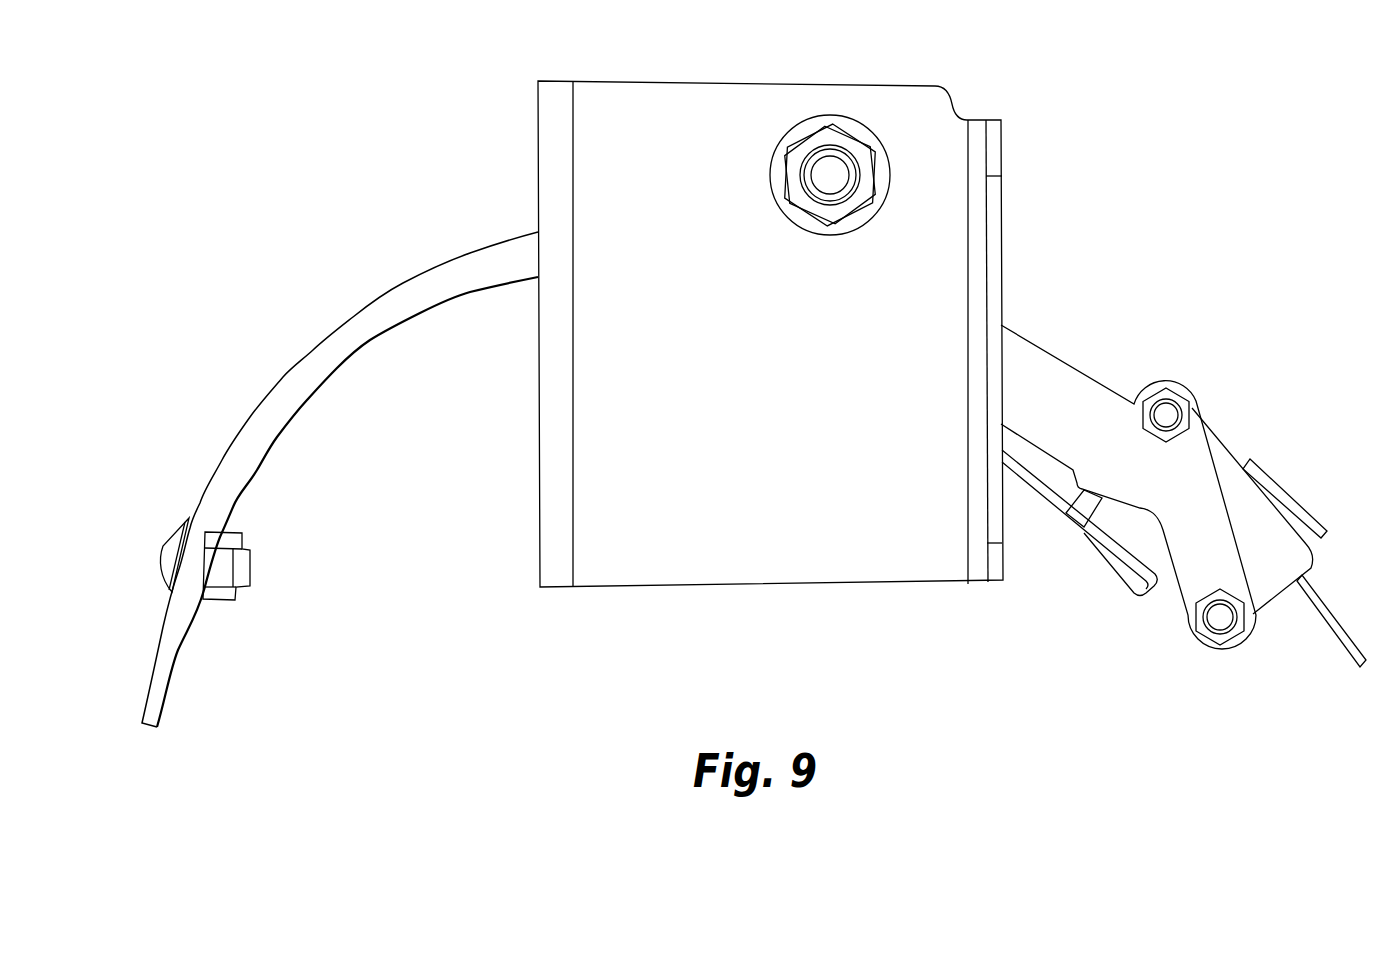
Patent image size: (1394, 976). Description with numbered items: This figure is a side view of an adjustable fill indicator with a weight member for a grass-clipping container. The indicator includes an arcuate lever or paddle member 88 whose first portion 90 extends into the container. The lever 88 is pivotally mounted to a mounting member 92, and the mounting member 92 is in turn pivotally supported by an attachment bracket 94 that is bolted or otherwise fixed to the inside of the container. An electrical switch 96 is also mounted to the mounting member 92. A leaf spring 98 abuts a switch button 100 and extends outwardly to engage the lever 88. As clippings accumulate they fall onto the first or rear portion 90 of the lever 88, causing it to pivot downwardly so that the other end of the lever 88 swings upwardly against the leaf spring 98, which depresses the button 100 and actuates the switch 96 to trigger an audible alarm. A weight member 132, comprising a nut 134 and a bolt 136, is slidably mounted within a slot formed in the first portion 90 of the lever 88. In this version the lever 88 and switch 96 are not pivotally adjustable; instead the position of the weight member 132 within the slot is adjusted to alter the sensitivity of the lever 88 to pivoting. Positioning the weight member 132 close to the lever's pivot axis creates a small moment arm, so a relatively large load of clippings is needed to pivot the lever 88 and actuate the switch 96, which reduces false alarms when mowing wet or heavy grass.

The lever 88 is at (287, 367).
The first portion 90 is at (268, 452).
The mounting member 92 is at (1035, 366).
The attachment bracket 94 is at (653, 82).
The electrical switch 96 is at (1290, 555).
The leaf spring 98 is at (1102, 570).
The switch button 100 is at (1083, 508).
The weight member 132 is at (198, 554).
The nut 134 is at (224, 603).
The bolt 136 is at (160, 563).